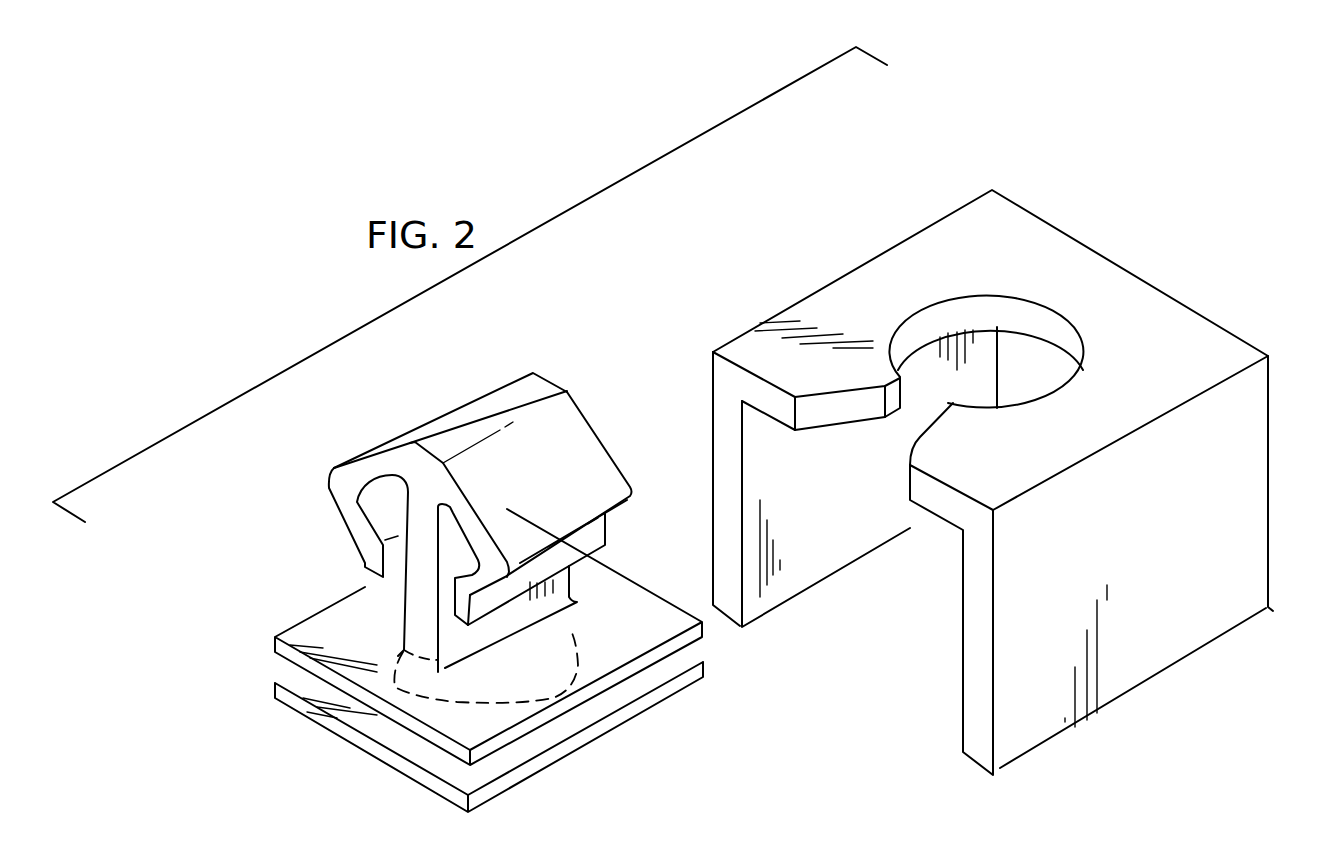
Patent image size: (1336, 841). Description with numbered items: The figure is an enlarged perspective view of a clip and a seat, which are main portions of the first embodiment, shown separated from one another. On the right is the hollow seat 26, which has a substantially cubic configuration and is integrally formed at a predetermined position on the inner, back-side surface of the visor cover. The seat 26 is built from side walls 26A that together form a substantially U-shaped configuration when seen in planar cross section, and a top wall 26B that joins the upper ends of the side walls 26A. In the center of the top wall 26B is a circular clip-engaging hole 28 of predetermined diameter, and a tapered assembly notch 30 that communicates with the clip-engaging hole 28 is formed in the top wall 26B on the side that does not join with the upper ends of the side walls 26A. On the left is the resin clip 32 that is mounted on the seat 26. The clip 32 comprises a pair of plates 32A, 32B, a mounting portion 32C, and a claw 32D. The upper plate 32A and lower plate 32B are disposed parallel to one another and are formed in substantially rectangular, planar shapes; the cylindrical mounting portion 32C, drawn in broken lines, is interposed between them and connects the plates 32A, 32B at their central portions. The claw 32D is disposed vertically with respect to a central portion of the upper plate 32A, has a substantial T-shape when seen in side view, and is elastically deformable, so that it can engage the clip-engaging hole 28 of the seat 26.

The seat 26 is at (1183, 284).
The side walls 26A is at (1022, 363).
The top wall 26B is at (1228, 353).
The clip-engaging hole 28 is at (948, 316).
The assembly notch 30 is at (913, 442).
The clip 32 is at (440, 382).
The upper plate 32A is at (332, 617).
The lower plate 32B is at (297, 683).
The mounting portion 32C is at (503, 715).
The claw 32D is at (403, 435).